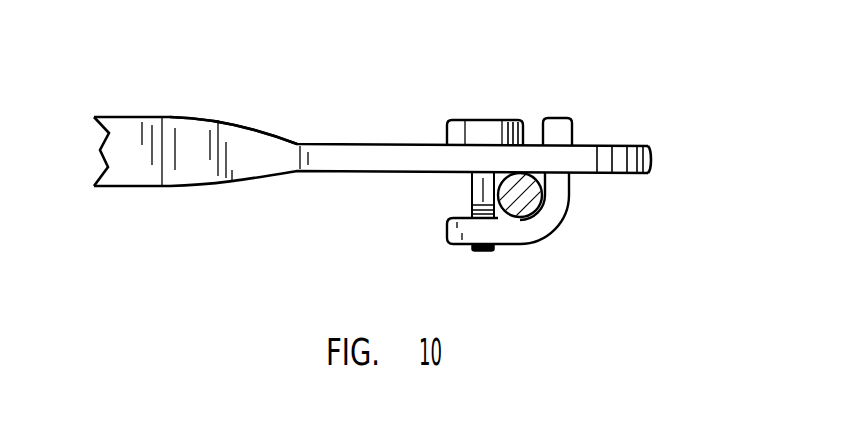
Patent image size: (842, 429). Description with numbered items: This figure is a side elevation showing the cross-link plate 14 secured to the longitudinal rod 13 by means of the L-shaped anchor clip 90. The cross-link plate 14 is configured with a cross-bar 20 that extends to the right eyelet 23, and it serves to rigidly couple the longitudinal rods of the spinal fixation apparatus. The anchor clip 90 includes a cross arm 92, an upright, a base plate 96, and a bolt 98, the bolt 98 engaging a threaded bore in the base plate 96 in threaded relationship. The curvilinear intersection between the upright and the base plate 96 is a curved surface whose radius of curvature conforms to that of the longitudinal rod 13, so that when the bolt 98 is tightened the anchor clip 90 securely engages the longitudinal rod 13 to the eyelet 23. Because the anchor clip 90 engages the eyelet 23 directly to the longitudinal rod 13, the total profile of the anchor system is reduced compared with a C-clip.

The cross-bar 20 is at (153, 158).
The cross-link plate 14 is at (265, 130).
The right eyelet 23 is at (583, 162).
The bolt 98 is at (480, 130).
The cross arm 92 is at (555, 130).
The anchor clip 90 is at (557, 192).
The longitudinal rod 13 is at (522, 197).
The base plate 96 is at (497, 227).